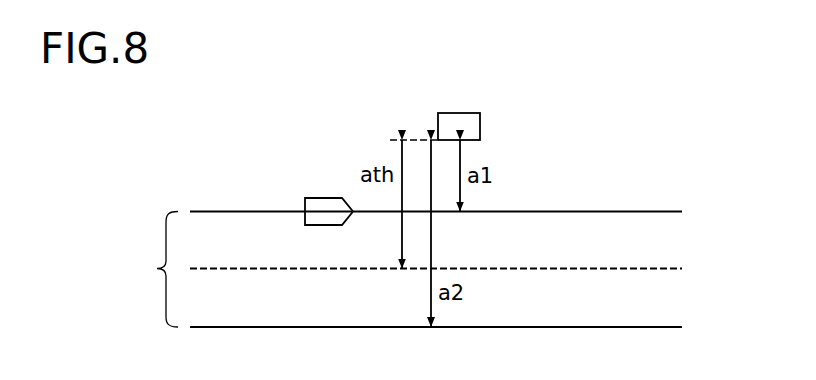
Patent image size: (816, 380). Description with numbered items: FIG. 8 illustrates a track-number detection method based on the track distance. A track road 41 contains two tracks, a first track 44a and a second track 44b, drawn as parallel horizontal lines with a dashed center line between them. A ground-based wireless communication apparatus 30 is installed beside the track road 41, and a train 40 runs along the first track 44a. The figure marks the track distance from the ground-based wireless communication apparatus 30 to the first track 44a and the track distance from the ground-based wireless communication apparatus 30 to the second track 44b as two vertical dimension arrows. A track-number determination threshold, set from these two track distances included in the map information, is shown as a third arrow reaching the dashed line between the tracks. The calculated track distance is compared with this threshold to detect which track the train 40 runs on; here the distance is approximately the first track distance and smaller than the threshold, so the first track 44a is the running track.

The ground-based wireless communication apparatus 30 is at (459, 111).
The train 40 is at (320, 198).
The track road 41 is at (157, 268).
The first track 44a is at (655, 212).
The second track 44b is at (655, 327).